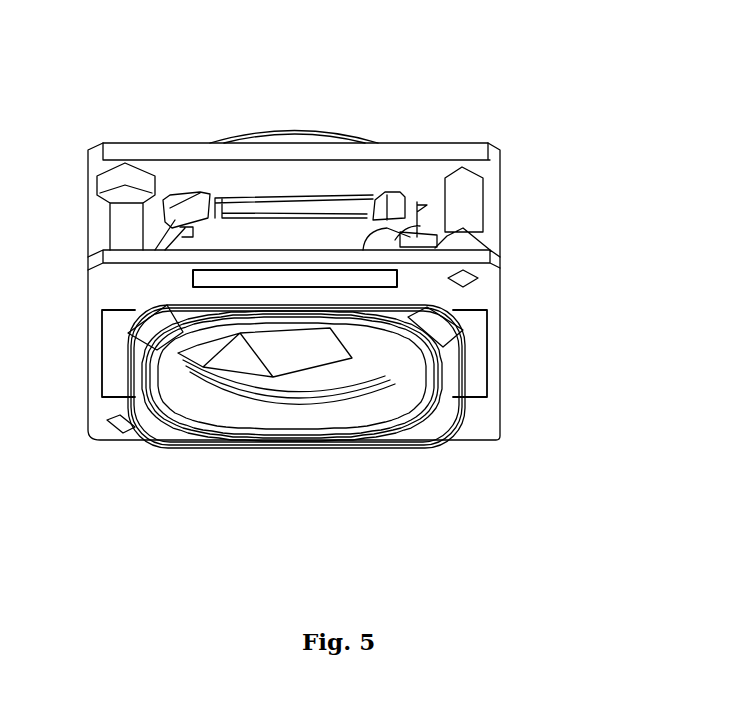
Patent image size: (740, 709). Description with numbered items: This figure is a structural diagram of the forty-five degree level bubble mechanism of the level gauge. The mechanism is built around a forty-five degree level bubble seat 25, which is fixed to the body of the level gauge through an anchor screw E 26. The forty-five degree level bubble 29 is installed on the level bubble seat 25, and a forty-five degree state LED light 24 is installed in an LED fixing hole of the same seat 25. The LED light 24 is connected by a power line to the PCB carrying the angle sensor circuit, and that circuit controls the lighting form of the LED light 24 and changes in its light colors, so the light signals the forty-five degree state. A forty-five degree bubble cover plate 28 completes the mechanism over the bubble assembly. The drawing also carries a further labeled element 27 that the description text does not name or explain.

The 45° state LED light 24 is at (412, 243).
The 45° level bubble seat 25 is at (287, 243).
The anchor screw E 26 is at (463, 276).
The housing 27 is at (487, 294).
The 45° bubble cover plate 28 is at (433, 333).
The 45° level bubble 29 is at (297, 345).